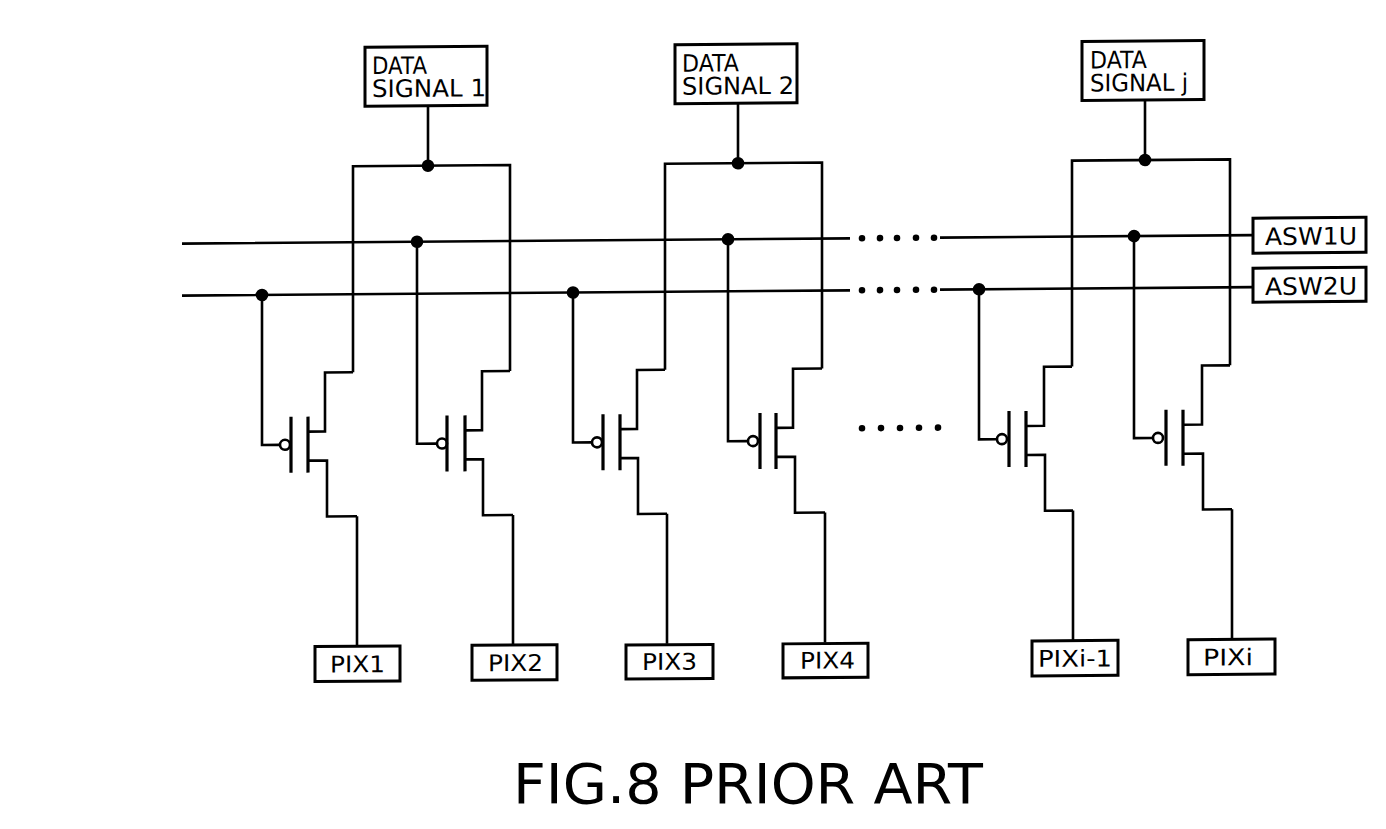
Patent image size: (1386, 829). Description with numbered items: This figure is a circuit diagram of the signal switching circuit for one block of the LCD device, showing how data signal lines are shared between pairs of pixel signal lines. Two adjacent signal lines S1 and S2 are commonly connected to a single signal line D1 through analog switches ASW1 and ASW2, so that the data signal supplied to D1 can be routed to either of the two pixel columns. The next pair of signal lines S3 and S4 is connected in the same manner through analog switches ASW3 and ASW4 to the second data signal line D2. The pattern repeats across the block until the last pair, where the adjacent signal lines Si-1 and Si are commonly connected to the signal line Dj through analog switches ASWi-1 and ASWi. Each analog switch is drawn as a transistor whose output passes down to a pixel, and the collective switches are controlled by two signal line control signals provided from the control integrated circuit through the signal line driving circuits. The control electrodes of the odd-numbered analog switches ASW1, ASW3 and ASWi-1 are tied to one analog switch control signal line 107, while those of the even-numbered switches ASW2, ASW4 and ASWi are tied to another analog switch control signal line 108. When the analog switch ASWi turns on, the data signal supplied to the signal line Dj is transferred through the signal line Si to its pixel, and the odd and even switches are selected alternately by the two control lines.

The analog switch control signal line 107 is at (201, 241).
The analog switch control signal line 108 is at (200, 297).
The signal line D1 is at (429, 134).
The signal line D2 is at (739, 134).
The signal line Dj is at (1146, 134).
The analog switch ASW1 is at (303, 478).
The analog switch ASW2 is at (459, 478).
The analog switch ASW3 is at (614, 478).
The analog switch ASW4 is at (770, 478).
The analog switch ASWi-1 is at (1020, 478).
The analog switch ASWi is at (1177, 478).
The signal line S1 is at (356, 612).
The signal line S2 is at (512, 612).
The signal line S3 is at (667, 612).
The signal line S4 is at (793, 578).
The signal line Si-1 is at (1072, 612).
The signal line Si is at (1231, 612).